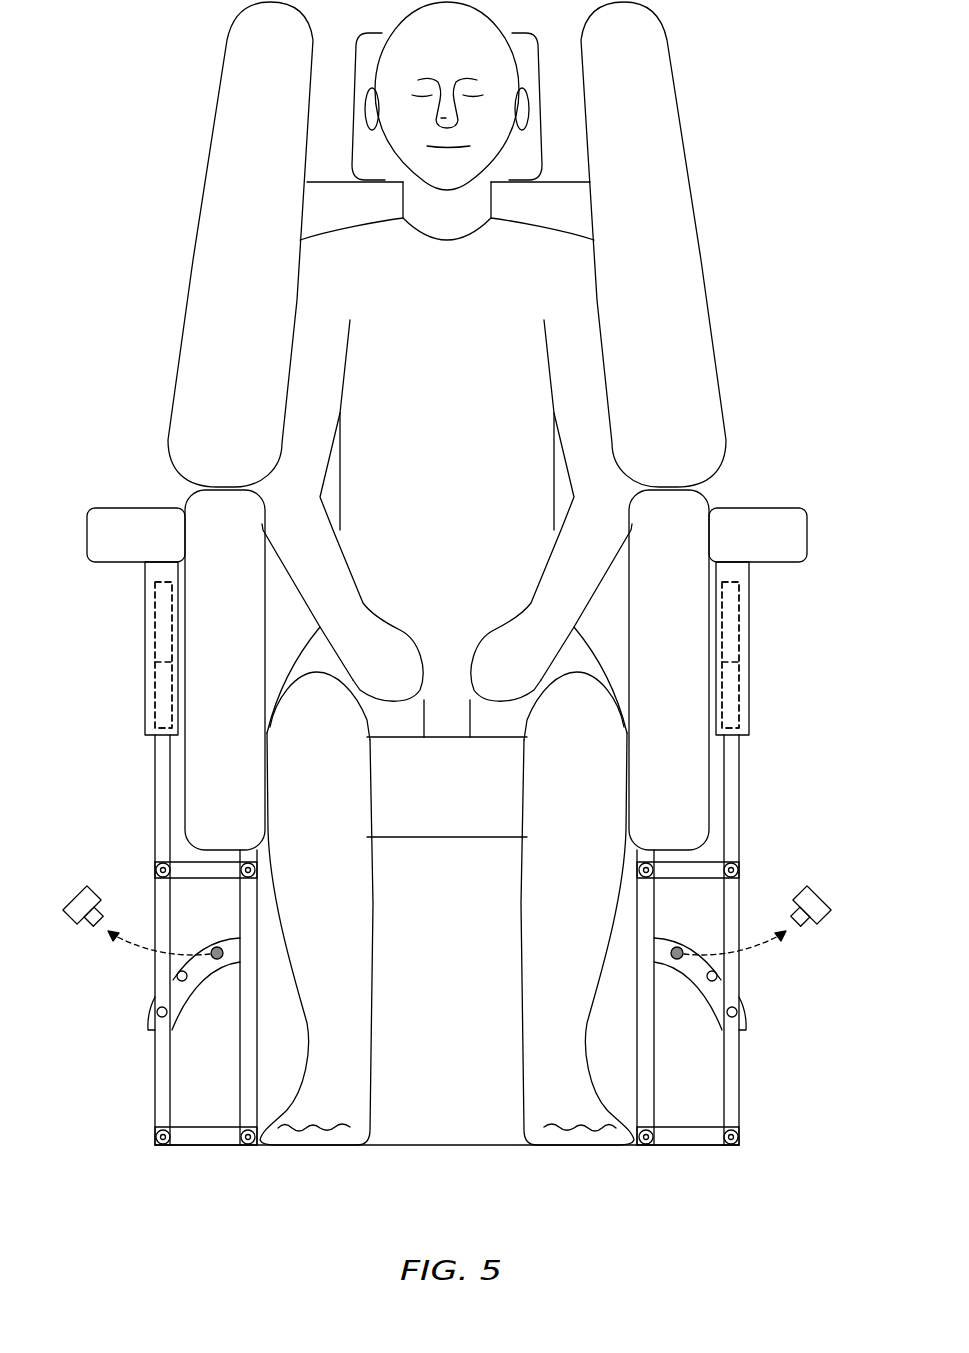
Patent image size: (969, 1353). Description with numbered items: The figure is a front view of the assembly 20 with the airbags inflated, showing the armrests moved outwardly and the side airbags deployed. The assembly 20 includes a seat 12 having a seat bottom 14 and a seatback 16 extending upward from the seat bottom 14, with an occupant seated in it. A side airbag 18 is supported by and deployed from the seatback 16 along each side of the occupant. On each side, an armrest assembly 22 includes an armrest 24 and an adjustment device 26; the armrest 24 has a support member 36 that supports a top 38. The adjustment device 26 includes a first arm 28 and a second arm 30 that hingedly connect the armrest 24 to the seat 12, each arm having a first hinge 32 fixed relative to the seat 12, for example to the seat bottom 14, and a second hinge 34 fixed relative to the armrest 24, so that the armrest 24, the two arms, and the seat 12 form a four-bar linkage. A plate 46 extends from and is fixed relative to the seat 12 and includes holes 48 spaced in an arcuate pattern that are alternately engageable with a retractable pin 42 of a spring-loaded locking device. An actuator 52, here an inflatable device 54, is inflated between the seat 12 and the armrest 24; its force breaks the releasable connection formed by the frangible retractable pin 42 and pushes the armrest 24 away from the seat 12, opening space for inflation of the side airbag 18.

The seat 12 is at (327, 160).
The seat bottom 14 is at (382, 1148).
The seatback 16 is at (550, 197).
The side airbag 18 is at (225, 212).
The assembly 20 is at (186, 74).
The armrest assembly 22 is at (110, 996).
The armrest 24 is at (115, 675).
The adjustment device 26 is at (179, 846).
The first arm 28 is at (200, 1137).
The second arm 30 is at (193, 880).
The first hinge 32 is at (258, 878).
The second hinge 34 is at (160, 868).
The support member 36 is at (152, 773).
The top 38 is at (122, 522).
The retractable pin 42 is at (70, 918).
The plate 46 is at (210, 941).
The holes 48 is at (186, 981).
The actuator 52 is at (175, 632).
The inflatable device 54 is at (390, 655).